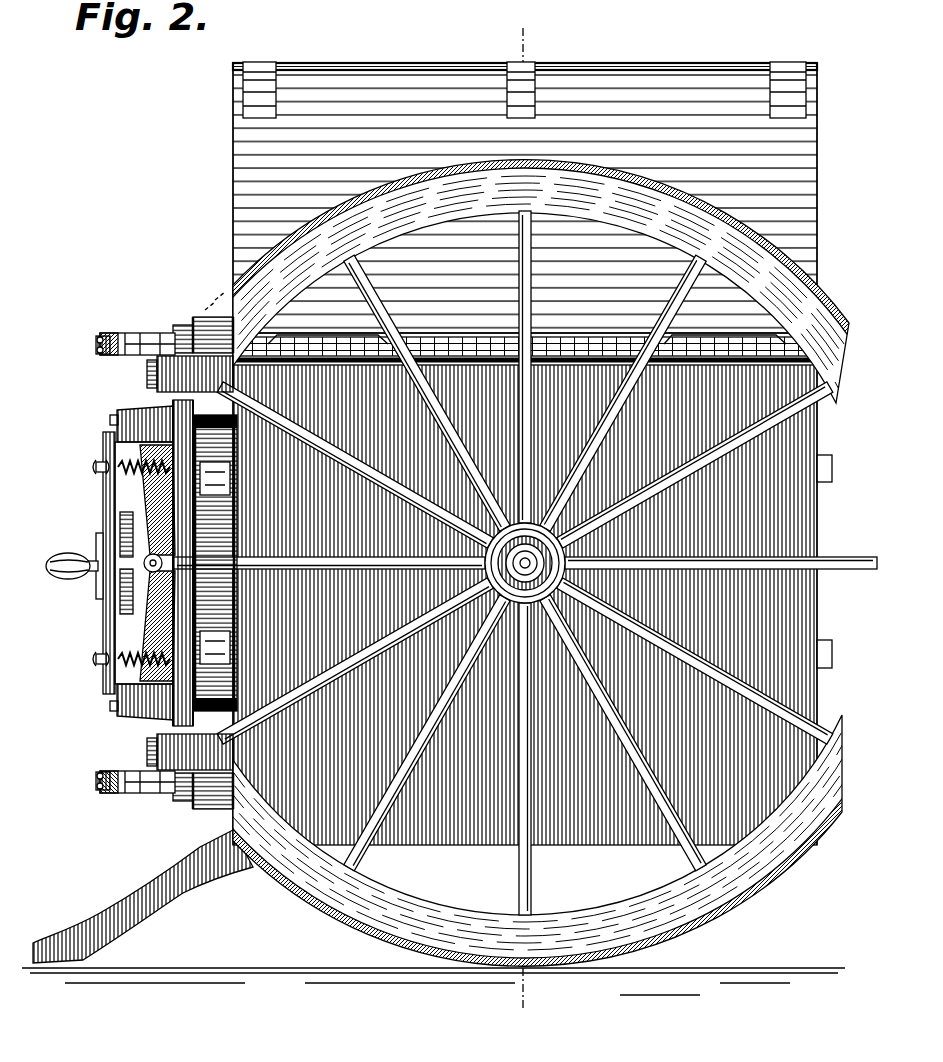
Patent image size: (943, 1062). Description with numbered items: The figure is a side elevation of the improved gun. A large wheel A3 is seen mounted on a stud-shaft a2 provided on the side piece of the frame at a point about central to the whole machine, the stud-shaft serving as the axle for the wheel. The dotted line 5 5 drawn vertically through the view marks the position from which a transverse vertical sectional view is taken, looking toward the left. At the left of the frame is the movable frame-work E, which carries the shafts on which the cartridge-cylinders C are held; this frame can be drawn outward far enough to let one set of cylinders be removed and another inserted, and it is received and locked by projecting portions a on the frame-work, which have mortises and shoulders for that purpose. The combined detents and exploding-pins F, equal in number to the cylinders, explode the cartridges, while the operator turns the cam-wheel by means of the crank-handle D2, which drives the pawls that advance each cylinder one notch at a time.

The wheels A3 is at (574, 922).
The stud-shafts a2 is at (553, 571).
The dotted line 5 5 is at (523, 520).
The cartridge-cylinders C is at (210, 337).
The projecting portions a is at (147, 367).
The movable frame-work E is at (100, 338).
The combined detents and exploding-pins F is at (100, 350).
The crank-handle D2 is at (60, 556).